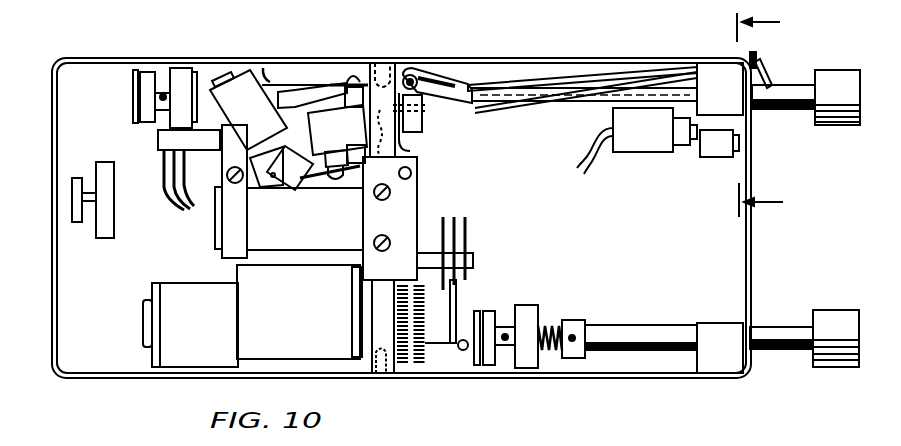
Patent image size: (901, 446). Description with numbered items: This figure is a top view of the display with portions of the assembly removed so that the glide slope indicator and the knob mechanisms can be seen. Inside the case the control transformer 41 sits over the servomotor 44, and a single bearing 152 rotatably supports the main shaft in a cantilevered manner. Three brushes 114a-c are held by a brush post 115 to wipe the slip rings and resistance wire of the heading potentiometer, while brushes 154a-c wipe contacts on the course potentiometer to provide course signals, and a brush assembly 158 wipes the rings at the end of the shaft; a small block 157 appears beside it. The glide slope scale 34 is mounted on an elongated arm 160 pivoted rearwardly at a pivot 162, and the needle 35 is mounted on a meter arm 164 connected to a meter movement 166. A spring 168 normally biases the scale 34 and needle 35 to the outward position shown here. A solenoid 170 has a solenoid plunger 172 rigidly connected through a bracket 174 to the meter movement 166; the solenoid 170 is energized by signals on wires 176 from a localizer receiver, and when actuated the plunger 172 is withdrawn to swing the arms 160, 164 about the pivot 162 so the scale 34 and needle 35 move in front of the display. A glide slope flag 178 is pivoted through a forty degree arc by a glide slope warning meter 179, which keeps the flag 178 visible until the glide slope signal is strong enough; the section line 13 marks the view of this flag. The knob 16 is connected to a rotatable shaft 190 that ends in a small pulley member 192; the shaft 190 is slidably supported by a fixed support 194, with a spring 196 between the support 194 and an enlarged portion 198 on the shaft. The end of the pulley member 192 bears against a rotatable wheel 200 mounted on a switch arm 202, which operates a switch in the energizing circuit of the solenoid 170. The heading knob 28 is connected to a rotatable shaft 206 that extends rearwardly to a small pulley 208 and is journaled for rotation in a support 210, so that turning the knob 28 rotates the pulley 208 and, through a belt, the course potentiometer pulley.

The section line 13- 13 is at (775, 113).
The knob 16 is at (833, 318).
The heading knob 28 is at (838, 105).
The glide slope scale 34 is at (770, 74).
The needle 35 is at (786, 40).
The control transformer 41 is at (308, 326).
The servomotor 44 is at (212, 326).
The brushes 114a-c is at (443, 217).
The brush post 115 is at (470, 262).
The bearing 152 is at (320, 226).
The brushes 154a-c is at (189, 200).
The block 157 is at (108, 170).
The brush assembly 158 is at (76, 180).
The elongated arm 160 is at (590, 86).
The pivot 162 is at (411, 74).
The meter arm 164 is at (520, 75).
The meter movement 166 is at (353, 137).
The spring 168 is at (427, 70).
The solenoid 170 is at (252, 113).
The solenoid plunger 172 is at (265, 160).
The bracket 174 is at (293, 150).
The wires 176 is at (264, 68).
The glide slope flag 178 is at (732, 152).
The glide slope warning meter 179 is at (660, 136).
The rotatable shaft 190 is at (640, 333).
The small pulley member 192 is at (488, 352).
The fixed support 194 is at (526, 308).
The spring 196 is at (548, 355).
The enlarged portion 198 is at (580, 328).
The rotatable wheel 200 is at (468, 350).
The switch arm 202 is at (466, 328).
The rotatable shaft 206 is at (578, 97).
The small pulley 208 is at (146, 83).
The support 210 is at (182, 90).